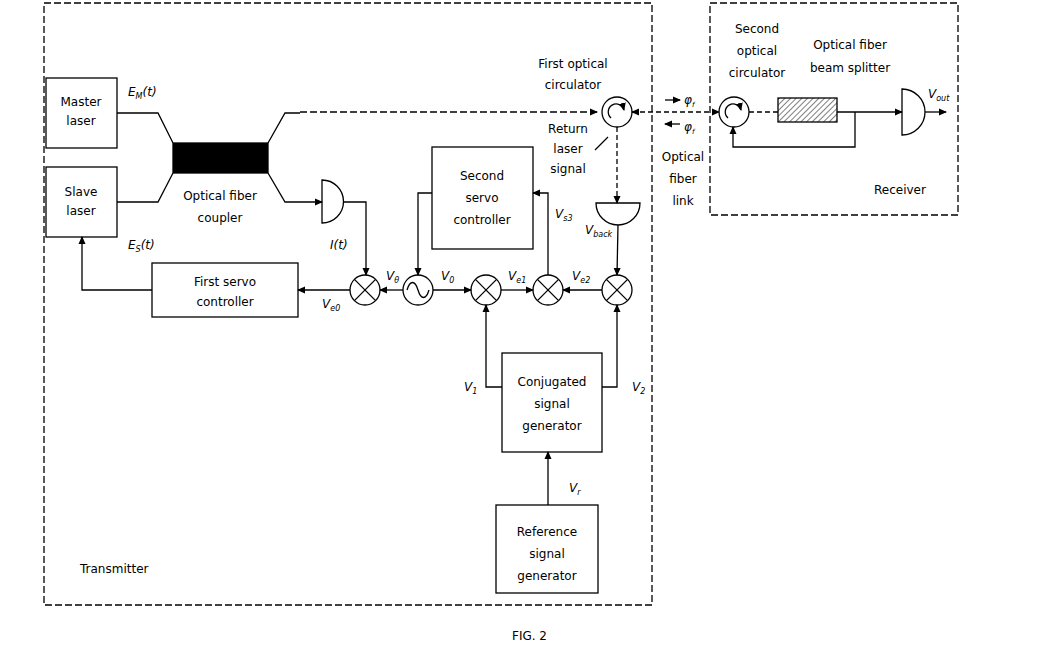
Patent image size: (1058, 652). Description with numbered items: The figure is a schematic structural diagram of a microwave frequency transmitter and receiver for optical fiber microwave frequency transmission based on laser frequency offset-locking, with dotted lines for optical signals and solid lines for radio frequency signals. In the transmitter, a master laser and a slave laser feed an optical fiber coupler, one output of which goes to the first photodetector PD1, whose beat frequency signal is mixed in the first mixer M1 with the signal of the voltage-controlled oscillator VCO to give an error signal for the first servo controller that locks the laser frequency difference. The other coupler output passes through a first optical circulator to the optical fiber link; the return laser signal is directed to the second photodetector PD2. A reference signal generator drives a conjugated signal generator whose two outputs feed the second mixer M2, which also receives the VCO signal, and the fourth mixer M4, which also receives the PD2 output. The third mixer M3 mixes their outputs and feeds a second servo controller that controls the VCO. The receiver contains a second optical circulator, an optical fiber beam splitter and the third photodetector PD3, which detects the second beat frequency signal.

The first photodetector PD1 is at (334, 193).
The second photodetector PD2 is at (608, 205).
The third photodetector PD3 is at (914, 101).
The first mixer M1 is at (365, 302).
The second mixer M2 is at (486, 283).
The third mixer M3 is at (548, 302).
The fourth mixer M4 is at (612, 301).
The voltage-controlled oscillator VCO is at (417, 302).